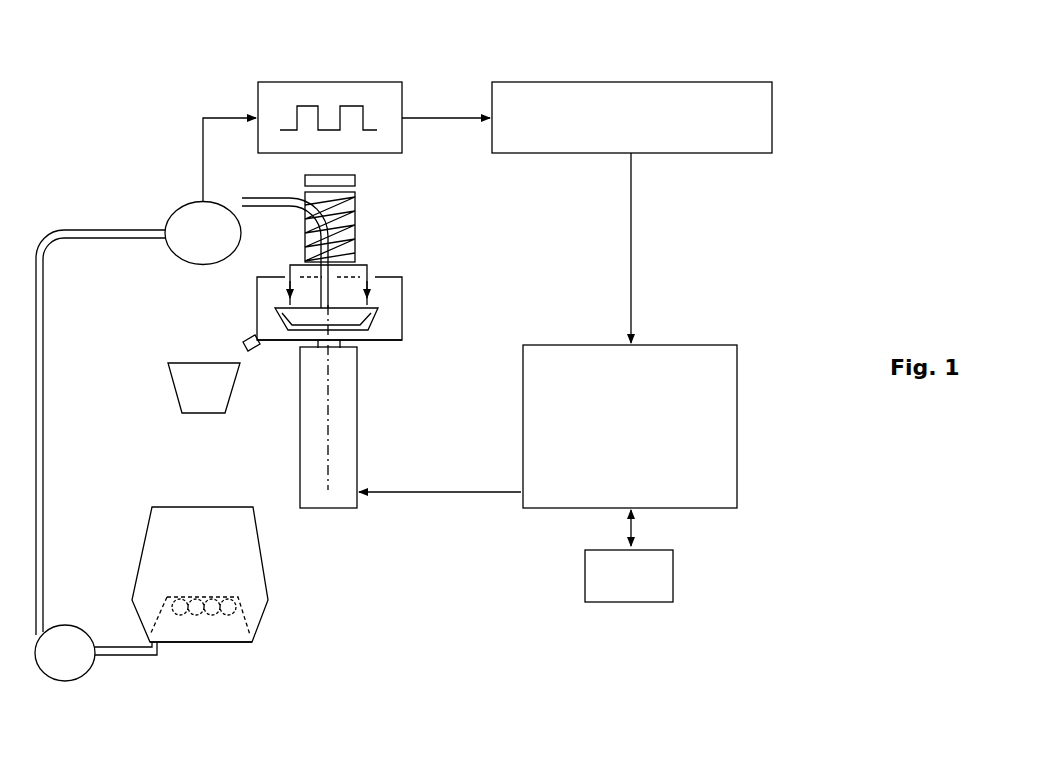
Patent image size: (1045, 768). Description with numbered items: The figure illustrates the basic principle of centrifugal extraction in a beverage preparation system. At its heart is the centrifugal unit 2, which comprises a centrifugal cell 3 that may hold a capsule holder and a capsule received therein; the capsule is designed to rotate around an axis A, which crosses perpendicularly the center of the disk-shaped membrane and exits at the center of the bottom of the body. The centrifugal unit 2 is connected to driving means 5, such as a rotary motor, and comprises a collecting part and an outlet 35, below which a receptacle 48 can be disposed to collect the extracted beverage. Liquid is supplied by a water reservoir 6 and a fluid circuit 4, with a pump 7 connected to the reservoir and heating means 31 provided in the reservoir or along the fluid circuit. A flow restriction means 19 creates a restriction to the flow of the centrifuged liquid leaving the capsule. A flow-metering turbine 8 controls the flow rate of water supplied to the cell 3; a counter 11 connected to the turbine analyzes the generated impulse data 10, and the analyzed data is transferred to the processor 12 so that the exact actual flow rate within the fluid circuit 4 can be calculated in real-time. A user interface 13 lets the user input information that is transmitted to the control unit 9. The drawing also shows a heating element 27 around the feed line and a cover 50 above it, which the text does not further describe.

The centrifugal unit 2 is at (392, 341).
The centrifugal cell 3 is at (382, 321).
The fluid circuit 4 is at (90, 230).
The driving means 5 is at (325, 510).
The water reservoir 6 is at (268, 598).
The pump 7 is at (65, 682).
The flow-metering turbine 8 is at (180, 207).
The control unit 9 is at (779, 194).
The impulse data 10 is at (280, 82).
The counter 11 is at (772, 95).
The processor 12 is at (737, 358).
The user interface 13 is at (673, 562).
The flow restriction means 19 is at (370, 291).
The heating coil 27 is at (355, 210).
The heating means 31 is at (155, 628).
The outlet 35 is at (246, 339).
The receptacle 48 is at (168, 378).
The cover 50 is at (360, 181).
The axis A is at (331, 420).